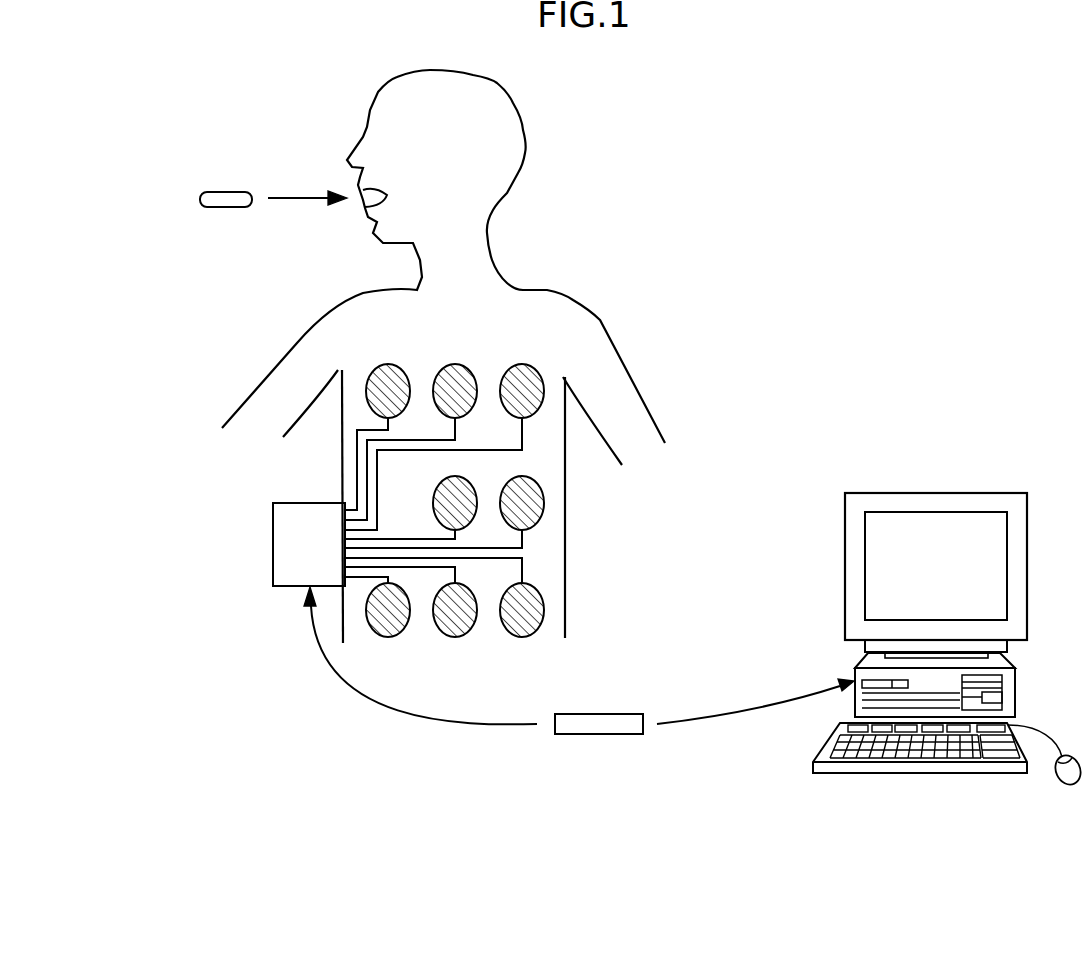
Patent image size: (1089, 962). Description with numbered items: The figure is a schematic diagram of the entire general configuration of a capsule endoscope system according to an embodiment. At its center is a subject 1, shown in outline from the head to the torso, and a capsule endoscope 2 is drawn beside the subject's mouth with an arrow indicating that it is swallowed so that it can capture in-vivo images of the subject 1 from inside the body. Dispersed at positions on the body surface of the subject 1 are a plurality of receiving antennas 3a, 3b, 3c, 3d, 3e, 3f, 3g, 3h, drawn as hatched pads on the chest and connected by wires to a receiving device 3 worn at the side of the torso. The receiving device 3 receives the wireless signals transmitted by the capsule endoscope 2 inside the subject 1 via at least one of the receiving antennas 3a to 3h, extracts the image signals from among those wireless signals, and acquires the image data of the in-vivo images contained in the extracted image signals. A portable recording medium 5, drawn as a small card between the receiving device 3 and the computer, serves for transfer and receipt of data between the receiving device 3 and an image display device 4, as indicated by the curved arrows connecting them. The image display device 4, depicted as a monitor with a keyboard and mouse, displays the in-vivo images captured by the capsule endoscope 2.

The subject 1 is at (508, 98).
The capsule endoscope 2 is at (227, 192).
The receiving device 3 is at (273, 507).
The receiving antenna 3a is at (367, 372).
The receiving antenna 3b is at (455, 364).
The receiving antenna 3c is at (521, 364).
The receiving antenna 3d is at (465, 478).
The receiving antenna 3e is at (531, 477).
The receiving antenna 3f is at (388, 637).
The receiving antenna 3g is at (455, 637).
The receiving antenna 3h is at (522, 637).
The image display device 4 is at (884, 483).
The portable recording medium 5 is at (595, 735).